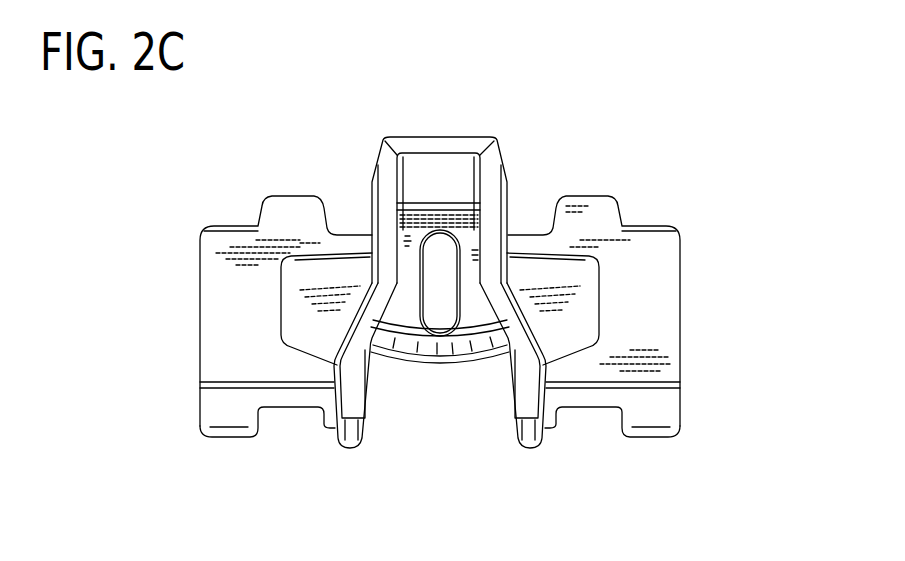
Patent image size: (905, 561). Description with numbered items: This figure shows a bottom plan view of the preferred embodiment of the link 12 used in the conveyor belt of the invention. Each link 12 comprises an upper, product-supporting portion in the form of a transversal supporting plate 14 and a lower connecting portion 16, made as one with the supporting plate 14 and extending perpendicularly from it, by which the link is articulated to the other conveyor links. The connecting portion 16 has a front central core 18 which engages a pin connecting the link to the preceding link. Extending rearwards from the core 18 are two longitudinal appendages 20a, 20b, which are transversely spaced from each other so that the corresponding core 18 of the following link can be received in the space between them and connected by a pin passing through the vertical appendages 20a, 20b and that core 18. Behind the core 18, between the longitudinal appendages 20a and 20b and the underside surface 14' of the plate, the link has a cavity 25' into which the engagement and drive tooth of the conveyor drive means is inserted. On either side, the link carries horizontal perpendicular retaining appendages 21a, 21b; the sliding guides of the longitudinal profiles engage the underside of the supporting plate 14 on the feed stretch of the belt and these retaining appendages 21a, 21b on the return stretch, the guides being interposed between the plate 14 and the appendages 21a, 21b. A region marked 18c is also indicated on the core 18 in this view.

The link 12 is at (182, 223).
The transversal supporting plate 14 is at (651, 314).
The connecting portion 16 is at (354, 139).
The front central core 18 is at (425, 170).
The hatched contact surface of top plate 18c is at (438, 215).
The cavity 25' is at (491, 203).
The longitudinal appendage 20a is at (383, 278).
The longitudinal appendage 20b is at (493, 278).
The horizontal perpendicular retaining appendage 21a is at (305, 337).
The horizontal perpendicular retaining appendage 21b is at (570, 340).
The underside surface 14' is at (440, 421).